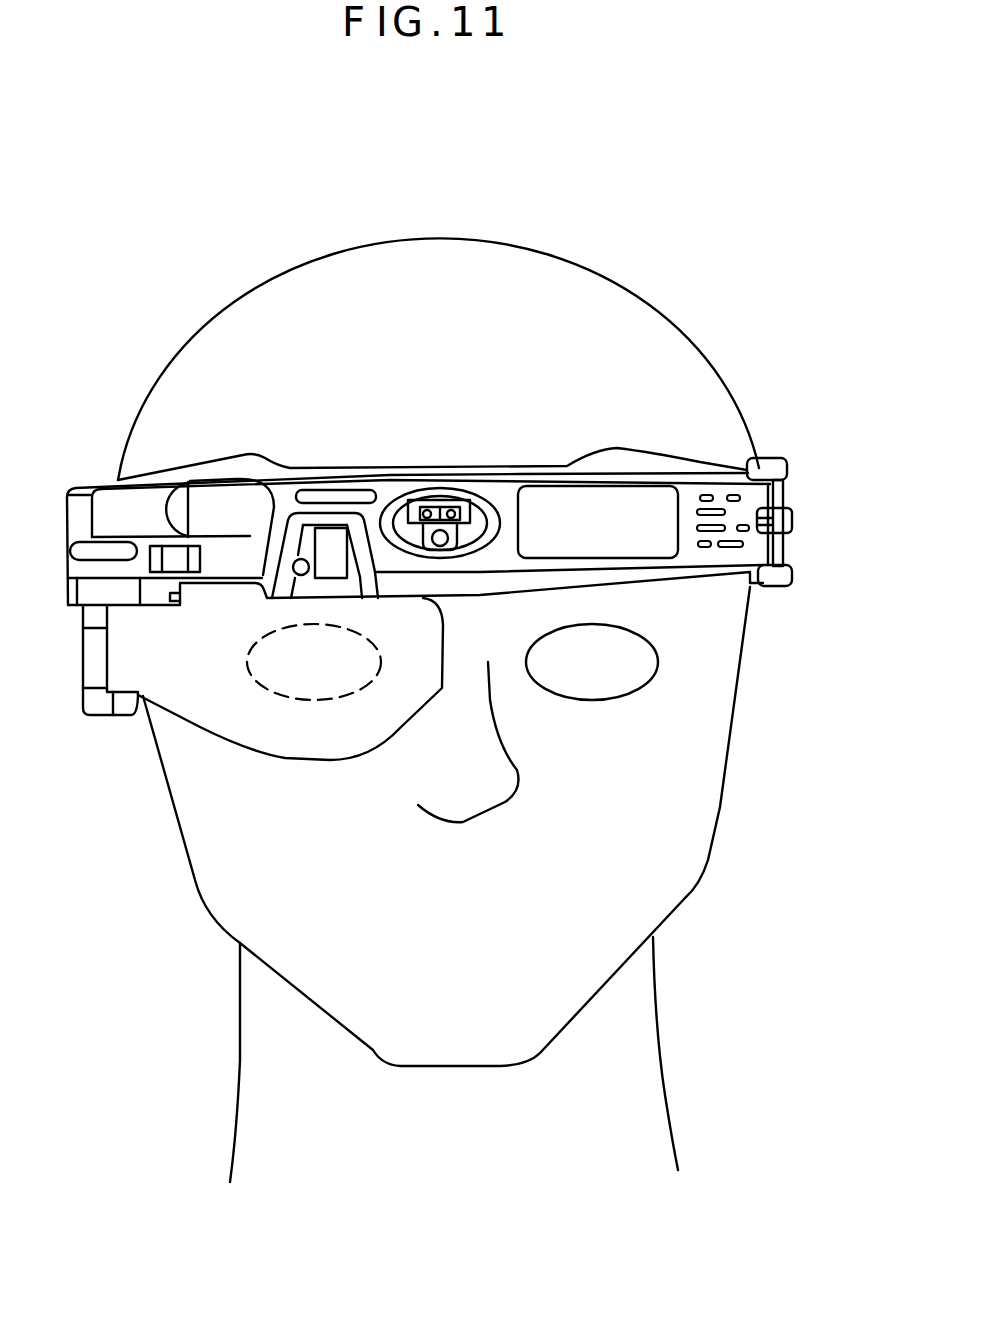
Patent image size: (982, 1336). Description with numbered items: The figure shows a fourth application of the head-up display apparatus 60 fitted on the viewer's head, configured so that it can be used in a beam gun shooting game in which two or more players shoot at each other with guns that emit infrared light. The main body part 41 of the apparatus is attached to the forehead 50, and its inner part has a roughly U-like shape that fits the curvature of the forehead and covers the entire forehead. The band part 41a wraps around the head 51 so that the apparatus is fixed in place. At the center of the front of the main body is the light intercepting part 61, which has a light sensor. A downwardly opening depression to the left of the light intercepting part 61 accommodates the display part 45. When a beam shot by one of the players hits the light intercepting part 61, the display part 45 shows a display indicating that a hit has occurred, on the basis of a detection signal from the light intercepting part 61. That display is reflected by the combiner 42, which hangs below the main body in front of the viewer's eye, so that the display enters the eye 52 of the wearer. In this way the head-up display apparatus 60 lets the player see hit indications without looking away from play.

The main body part 41 is at (505, 555).
The band part 41a is at (785, 493).
The combiner 42 is at (217, 700).
The display part 45 is at (333, 548).
The forehead 50 is at (527, 440).
The head 51 is at (421, 278).
The eye 52 is at (315, 702).
The head-up display apparatus 60 is at (666, 432).
The light intercepting part 61 is at (440, 500).